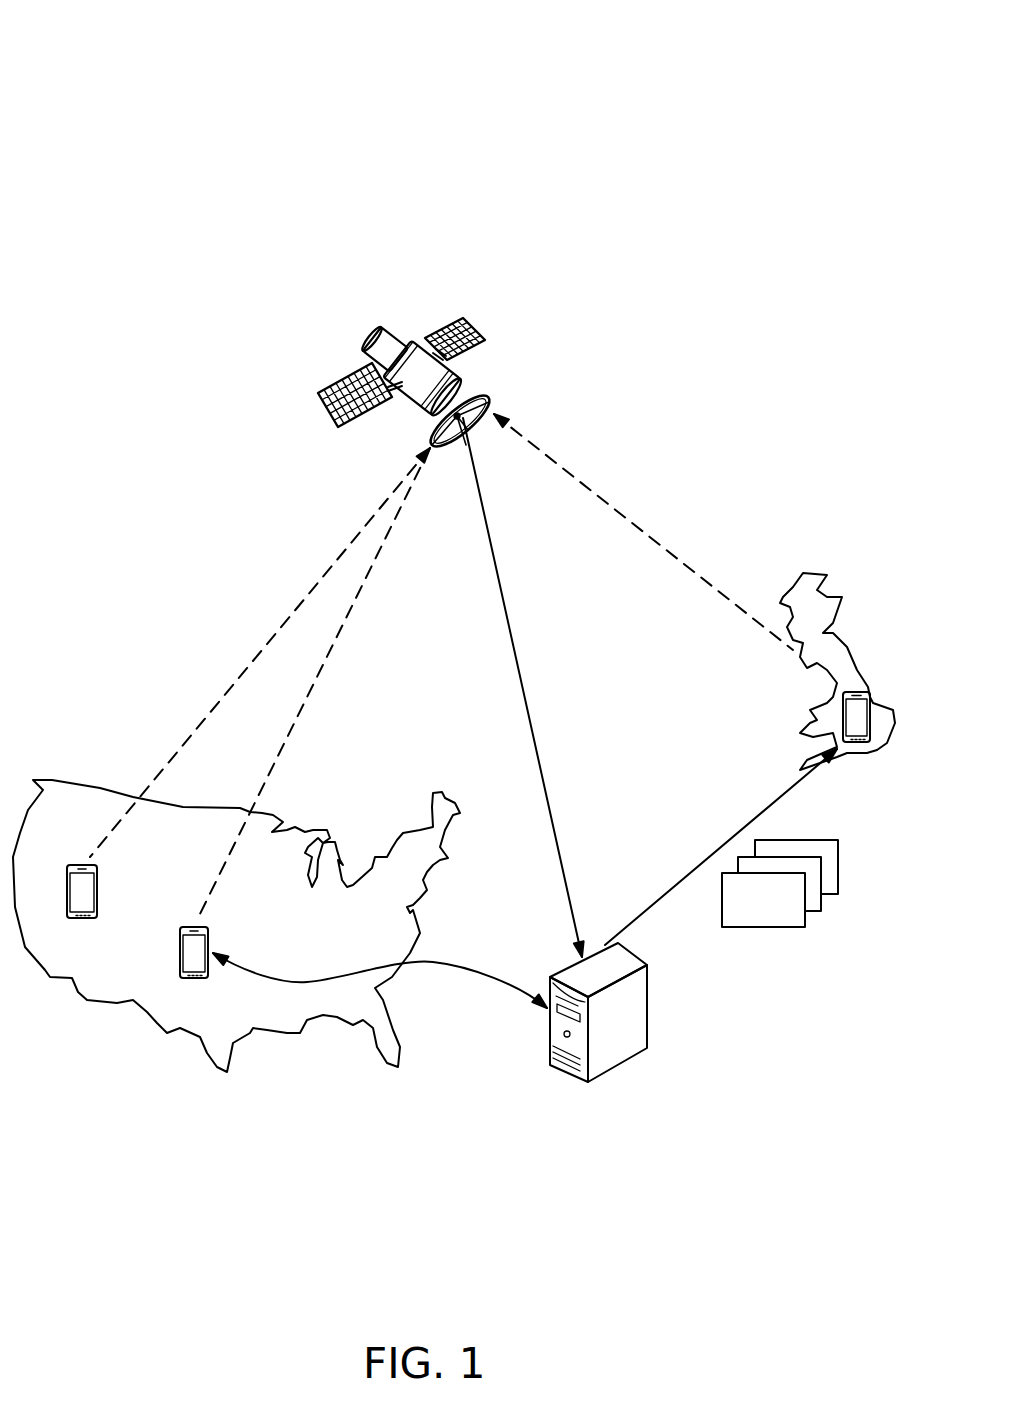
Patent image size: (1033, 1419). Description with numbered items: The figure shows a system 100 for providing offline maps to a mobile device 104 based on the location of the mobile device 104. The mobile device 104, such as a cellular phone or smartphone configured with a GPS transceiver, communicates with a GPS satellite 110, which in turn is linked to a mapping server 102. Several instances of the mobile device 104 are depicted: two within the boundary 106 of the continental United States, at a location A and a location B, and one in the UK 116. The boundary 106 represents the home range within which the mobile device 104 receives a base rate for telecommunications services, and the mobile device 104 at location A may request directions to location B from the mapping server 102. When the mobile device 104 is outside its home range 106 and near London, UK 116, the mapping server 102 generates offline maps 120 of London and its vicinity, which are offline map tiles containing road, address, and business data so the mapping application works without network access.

The system 100 is at (126, 80).
The mapping server 102 is at (647, 1048).
The mobile device 104 is at (77, 918).
The boundary of the continental United States 106 is at (110, 793).
The GPS satellite 110 is at (462, 381).
The UK 116 is at (803, 573).
The offline maps 120 is at (784, 914).